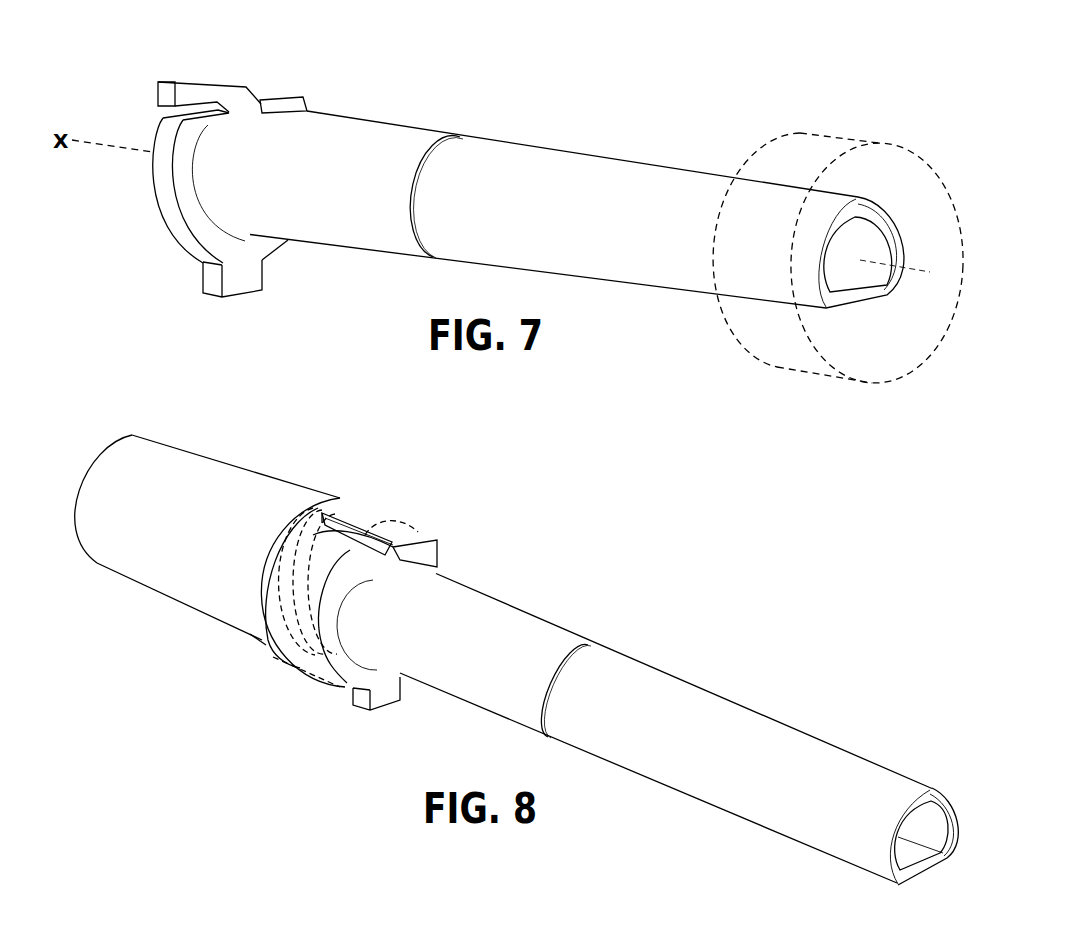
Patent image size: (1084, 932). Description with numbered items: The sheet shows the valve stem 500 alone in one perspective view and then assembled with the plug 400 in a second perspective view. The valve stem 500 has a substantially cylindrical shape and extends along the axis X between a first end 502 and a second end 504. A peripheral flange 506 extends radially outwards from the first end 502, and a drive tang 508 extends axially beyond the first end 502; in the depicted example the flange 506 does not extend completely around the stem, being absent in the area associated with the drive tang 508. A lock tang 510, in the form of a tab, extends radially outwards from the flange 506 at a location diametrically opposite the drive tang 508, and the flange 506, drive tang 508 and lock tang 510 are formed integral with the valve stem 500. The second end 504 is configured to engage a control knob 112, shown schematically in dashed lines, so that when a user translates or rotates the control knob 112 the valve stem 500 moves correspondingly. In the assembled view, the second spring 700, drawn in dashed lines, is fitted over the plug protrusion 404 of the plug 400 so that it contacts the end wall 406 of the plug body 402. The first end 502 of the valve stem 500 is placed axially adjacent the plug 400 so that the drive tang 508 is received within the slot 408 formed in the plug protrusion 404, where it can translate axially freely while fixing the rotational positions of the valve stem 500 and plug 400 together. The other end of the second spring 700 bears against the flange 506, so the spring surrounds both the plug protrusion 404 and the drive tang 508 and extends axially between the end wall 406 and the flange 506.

In FIG. 7, the control knob 112 is at (833, 135).
In FIG. 7, the valve stem 500 is at (575, 315).
In FIG. 8, the valve stem 500 is at (599, 798).
In FIG. 7, the first end 502 is at (274, 67).
In FIG. 7, the second end 504 is at (802, 354).
In FIG. 7, the peripheral flange 506 is at (172, 217).
In FIG. 8, the peripheral flange 506 is at (433, 553).
In FIG. 7, the drive tang 508 is at (192, 82).
In FIG. 8, the drive tang 508 is at (352, 522).
In FIG. 7, the lock tang 510 is at (240, 280).
In FIG. 8, the lock tang 510 is at (383, 692).
In FIG. 8, the plug 400 is at (84, 430).
In FIG. 8, the plug body 402 is at (135, 550).
In FIG. 8, the plug protrusion 404 is at (263, 643).
In FIG. 8, the end wall 406 is at (270, 557).
In FIG. 8, the slot 408 is at (315, 499).
In FIG. 8, the second spring 700 is at (283, 620).